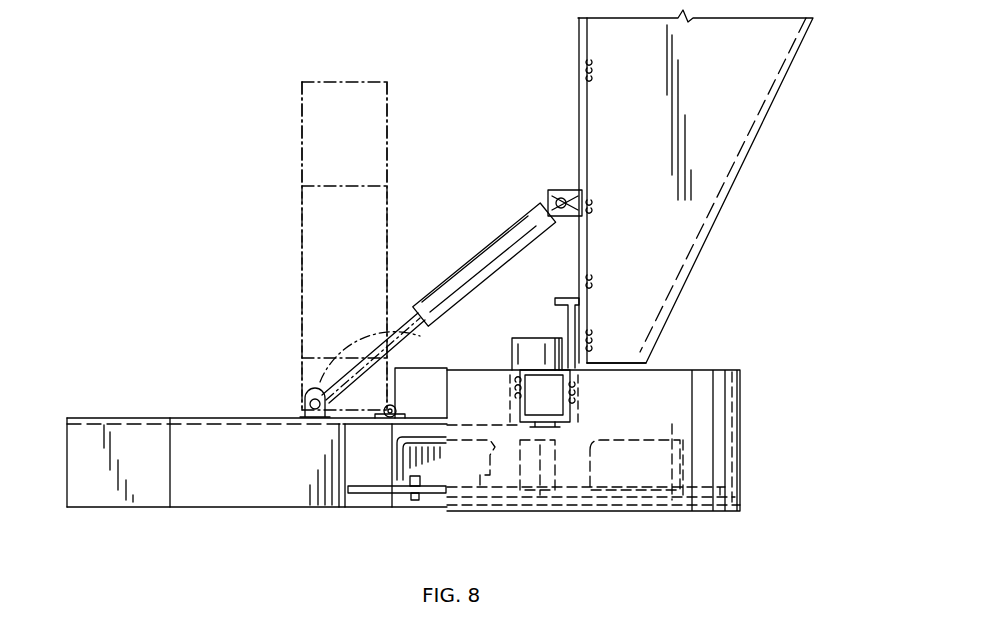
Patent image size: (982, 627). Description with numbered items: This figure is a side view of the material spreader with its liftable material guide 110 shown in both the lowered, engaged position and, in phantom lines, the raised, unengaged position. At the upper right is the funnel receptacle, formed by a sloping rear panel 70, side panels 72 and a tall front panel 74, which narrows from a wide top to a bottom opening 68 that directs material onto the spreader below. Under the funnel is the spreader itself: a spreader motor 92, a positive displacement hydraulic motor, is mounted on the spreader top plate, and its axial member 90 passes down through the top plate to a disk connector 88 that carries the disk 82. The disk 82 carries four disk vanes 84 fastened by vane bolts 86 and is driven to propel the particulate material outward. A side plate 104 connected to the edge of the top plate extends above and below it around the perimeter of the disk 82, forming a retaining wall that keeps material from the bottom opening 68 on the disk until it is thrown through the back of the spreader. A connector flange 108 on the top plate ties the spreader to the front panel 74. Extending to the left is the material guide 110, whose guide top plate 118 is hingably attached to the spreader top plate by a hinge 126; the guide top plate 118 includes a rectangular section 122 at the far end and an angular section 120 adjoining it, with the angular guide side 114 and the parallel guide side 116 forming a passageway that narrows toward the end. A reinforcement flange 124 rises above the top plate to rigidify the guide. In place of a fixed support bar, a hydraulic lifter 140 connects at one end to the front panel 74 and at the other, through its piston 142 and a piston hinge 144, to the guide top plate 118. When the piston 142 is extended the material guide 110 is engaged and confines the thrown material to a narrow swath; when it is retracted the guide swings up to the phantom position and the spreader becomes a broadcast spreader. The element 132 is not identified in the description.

The bottom opening 68 is at (628, 357).
The rear panel 70 is at (792, 67).
The side panels 72 is at (745, 93).
The front panel 74 is at (583, 68).
The disk 82 is at (365, 507).
The disk vanes 84 is at (430, 472).
The vane bolts 86 is at (410, 507).
The disk connector 88 is at (572, 506).
The axial member 90 is at (555, 432).
The spreader motor 92 is at (534, 352).
The side plate 104 is at (737, 406).
The connector flange 108 is at (565, 298).
The material guide 110 is at (390, 95).
The angular guide side 114 is at (322, 228).
The parallel guide side 116 is at (313, 135).
The guide top plate 118 is at (159, 415).
The angular section 120 is at (250, 418).
The rectangular section 122 is at (88, 415).
The reinforcement flange 124 is at (398, 396).
The hinge 126 is at (402, 412).
The motor 132 is at (572, 393).
The hydraulic lifter 140 is at (500, 236).
The piston 142 is at (352, 375).
The piston hinge 144 is at (310, 397).